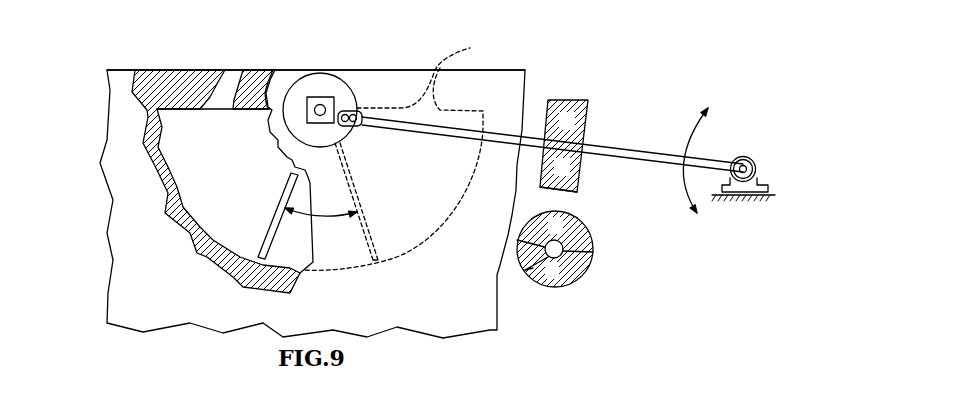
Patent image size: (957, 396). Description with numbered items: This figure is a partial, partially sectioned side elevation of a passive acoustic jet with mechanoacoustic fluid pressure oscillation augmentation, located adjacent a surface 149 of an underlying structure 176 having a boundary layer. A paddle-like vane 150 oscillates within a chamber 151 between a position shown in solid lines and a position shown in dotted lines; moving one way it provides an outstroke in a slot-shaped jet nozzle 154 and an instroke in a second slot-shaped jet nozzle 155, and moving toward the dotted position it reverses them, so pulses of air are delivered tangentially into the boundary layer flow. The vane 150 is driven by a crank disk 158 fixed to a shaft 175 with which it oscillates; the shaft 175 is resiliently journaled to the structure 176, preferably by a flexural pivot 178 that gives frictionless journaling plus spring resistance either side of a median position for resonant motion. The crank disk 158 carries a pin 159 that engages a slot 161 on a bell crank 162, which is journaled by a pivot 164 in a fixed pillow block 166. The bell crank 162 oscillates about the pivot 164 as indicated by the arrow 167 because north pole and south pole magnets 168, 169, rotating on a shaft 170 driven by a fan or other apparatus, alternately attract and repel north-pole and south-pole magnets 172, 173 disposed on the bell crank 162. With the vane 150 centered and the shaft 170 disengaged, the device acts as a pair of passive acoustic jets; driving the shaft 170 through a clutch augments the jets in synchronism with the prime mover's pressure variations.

The surface 149 is at (407, 70).
The paddle-like vane 150 is at (270, 232).
The chamber 151 is at (307, 252).
The jet nozzle 154 is at (238, 77).
The jet nozzle 155 is at (406, 149).
The crank disk 158 is at (337, 72).
The pin 159 is at (355, 111).
The slot 161 is at (348, 127).
The bell crank 162 is at (430, 136).
The pivot 164 is at (740, 158).
The fixed pillow block 166 is at (758, 180).
The arrow 167 is at (688, 142).
The north pole magnet 168 is at (591, 230).
The south pole magnet 169 is at (583, 273).
The shaft 170 is at (533, 268).
The north-pole magnet 172 is at (567, 100).
The south-pole magnet 173 is at (580, 181).
The shaft 175 is at (307, 110).
The underlying structure 176 is at (275, 78).
The flexural pivot 178 is at (318, 123).